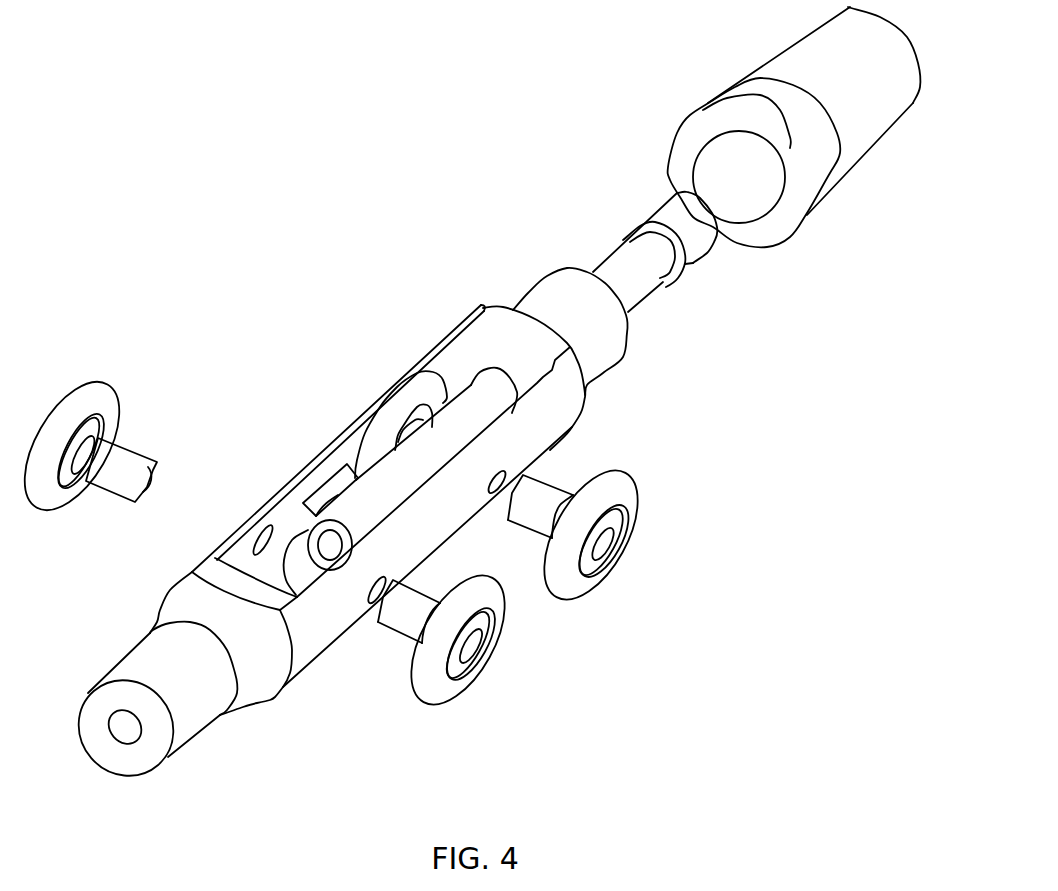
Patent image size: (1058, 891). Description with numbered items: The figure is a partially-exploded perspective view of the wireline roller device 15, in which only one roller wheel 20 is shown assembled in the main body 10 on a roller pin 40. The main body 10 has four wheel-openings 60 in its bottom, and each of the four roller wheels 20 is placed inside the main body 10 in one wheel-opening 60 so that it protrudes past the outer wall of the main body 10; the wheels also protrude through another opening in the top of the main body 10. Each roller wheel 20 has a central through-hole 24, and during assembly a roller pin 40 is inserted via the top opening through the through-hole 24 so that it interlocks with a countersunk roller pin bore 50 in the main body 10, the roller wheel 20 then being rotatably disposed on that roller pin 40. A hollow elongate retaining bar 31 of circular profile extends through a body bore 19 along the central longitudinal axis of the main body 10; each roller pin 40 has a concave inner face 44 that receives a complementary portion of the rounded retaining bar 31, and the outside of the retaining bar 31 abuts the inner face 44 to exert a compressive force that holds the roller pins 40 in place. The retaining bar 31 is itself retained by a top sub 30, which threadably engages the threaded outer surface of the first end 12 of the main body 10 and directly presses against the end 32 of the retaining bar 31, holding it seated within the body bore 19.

The main body 10 is at (612, 368).
The first end 12 is at (628, 342).
The wireline roller device 15 is at (462, 401).
The body bore 19 is at (300, 587).
The roller wheel 20 is at (601, 520).
The central through-hole 24 is at (620, 533).
The top sub 30 is at (880, 127).
The retaining bar 31 is at (685, 258).
The end of the retaining bar 32 is at (720, 230).
The roller pin 40 is at (90, 466).
The inner face 44 is at (105, 507).
The roller pin bore 50 is at (281, 512).
The wheel-opening 60 is at (445, 395).